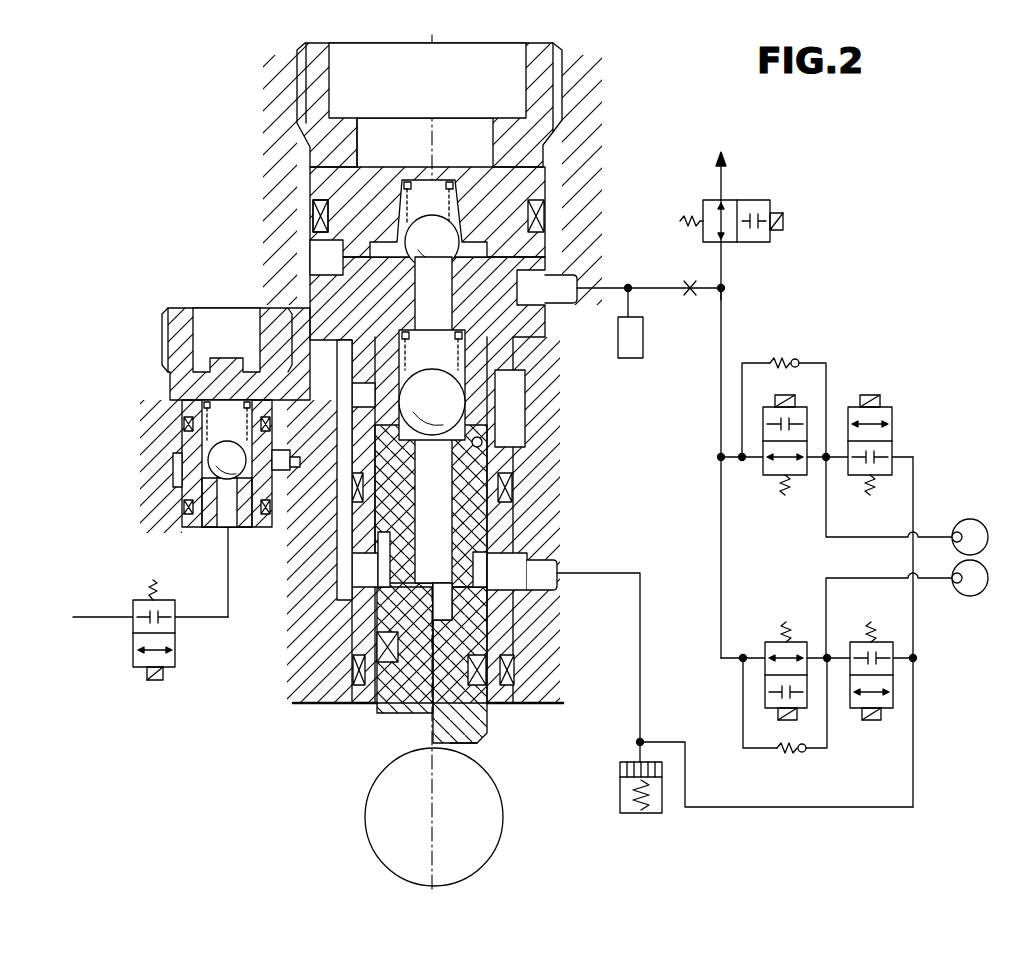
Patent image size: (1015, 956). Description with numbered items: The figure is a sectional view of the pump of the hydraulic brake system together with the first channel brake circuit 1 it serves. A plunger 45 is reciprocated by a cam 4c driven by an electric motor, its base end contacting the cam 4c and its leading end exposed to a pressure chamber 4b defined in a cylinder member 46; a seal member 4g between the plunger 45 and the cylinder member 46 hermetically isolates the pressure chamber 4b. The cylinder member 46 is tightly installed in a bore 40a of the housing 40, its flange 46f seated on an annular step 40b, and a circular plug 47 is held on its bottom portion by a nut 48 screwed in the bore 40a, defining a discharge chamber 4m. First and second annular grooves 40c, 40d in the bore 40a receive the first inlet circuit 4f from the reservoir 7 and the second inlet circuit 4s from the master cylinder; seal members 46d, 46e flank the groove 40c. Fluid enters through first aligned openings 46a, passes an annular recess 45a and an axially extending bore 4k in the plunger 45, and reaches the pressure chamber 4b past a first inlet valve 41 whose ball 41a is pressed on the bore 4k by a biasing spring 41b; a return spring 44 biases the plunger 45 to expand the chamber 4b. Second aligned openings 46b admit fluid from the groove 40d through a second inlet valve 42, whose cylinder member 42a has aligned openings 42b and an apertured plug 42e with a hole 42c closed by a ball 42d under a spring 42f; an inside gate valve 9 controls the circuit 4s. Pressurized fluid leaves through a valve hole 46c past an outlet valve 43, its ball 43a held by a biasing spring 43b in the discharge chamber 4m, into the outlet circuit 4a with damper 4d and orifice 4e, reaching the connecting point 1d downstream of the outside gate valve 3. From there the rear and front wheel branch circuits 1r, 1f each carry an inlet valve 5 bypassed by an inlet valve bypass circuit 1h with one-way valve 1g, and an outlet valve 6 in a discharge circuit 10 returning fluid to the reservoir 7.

The first channel brake circuit 1 is at (723, 318).
The connecting point 1d is at (723, 287).
The front wheel branch circuit 1f is at (855, 537).
The one-way valve 1g is at (798, 360).
The inlet valve bypass circuit 1h is at (828, 364).
The rear wheel branch circuit 1r is at (860, 578).
The outside gate valve 3 is at (762, 200).
The outlet circuit 4a is at (705, 293).
The pressure chamber 4b is at (580, 272).
The cam 4c is at (503, 817).
The damper 4d is at (645, 350).
The orifice 4e is at (688, 288).
The first inlet circuit 4f is at (641, 683).
The seal member 4g is at (487, 705).
The axially extending bore 4k is at (294, 703).
The discharge chamber 4m is at (400, 148).
The second inlet circuit 4s is at (205, 620).
The inlet valve 5 is at (763, 460).
The outlet valve 6 is at (880, 407).
The reservoir 7 is at (620, 790).
The inside gate valve 9 is at (133, 605).
The discharge circuit 10 is at (728, 807).
The housing 40 is at (572, 60).
The bore 40a is at (328, 262).
The annular step 40b is at (345, 430).
The first annular groove 40c is at (520, 583).
The second annular groove 40d is at (300, 475).
The first inlet valve 41 is at (466, 418).
The ball 41a is at (485, 385).
The biasing spring 41b is at (400, 345).
The second inlet valve 42 is at (155, 468).
The cylinder member 42a is at (200, 480).
The aligned openings 42b is at (192, 470).
The axially extending hole 42c is at (230, 570).
The ball 42d is at (222, 455).
The apertured plug 42e is at (215, 528).
The spring 42f is at (180, 404).
The outlet valve 43 is at (468, 236).
The ball 43a is at (442, 230).
The biasing spring 43b is at (400, 182).
The return spring 44 is at (487, 443).
The plunger 45 is at (426, 712).
The annular recess 45a is at (500, 605).
The cylinder member 46 is at (367, 703).
The first aligned openings 46a is at (535, 565).
The second aligned openings 46b is at (510, 418).
The valve hole 46c is at (315, 250).
The seal member 46d is at (357, 662).
The seal member 46e is at (343, 545).
The flange 46f is at (540, 327).
The circular plug 47 is at (460, 140).
The nut 48 is at (297, 62).